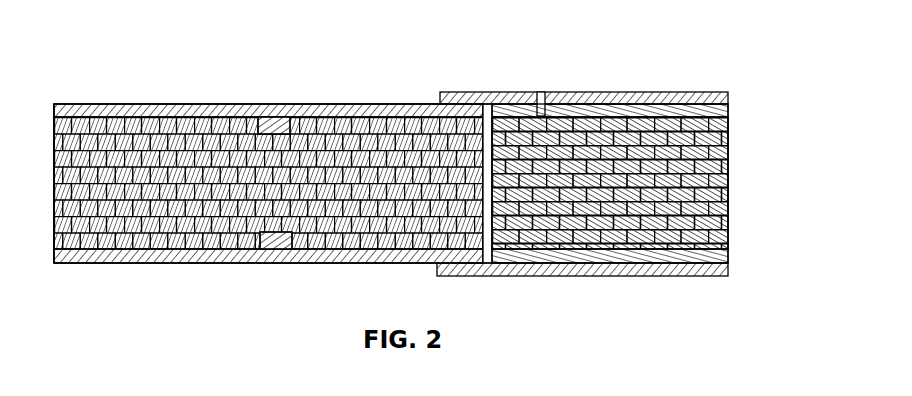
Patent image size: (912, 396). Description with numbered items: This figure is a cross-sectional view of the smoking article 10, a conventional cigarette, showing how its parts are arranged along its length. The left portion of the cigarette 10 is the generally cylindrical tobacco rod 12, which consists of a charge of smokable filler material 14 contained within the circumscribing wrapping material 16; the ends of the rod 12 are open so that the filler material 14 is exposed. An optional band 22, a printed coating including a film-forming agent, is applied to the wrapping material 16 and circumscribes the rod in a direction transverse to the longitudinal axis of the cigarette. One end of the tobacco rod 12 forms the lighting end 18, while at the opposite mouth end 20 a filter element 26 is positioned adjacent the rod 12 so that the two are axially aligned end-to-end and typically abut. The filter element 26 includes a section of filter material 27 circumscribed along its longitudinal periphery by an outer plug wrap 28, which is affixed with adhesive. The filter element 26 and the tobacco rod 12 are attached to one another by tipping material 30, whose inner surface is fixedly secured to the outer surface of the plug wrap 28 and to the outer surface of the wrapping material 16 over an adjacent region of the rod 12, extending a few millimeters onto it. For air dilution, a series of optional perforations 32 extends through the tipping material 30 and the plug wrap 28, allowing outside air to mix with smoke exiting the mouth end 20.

The smoking article 10 is at (683, 34).
The rod 12 is at (146, 270).
The smokable filler material 14 is at (296, 237).
The wrapping material 16 is at (137, 110).
The lighting end 18 is at (48, 124).
The mouth end 20 is at (738, 99).
The band 22 is at (280, 124).
The filter element 26 is at (738, 115).
The filter material 27 is at (728, 207).
The plug wrap 28 is at (656, 268).
The tipping material 30 is at (568, 276).
The perforations 32 is at (542, 94).